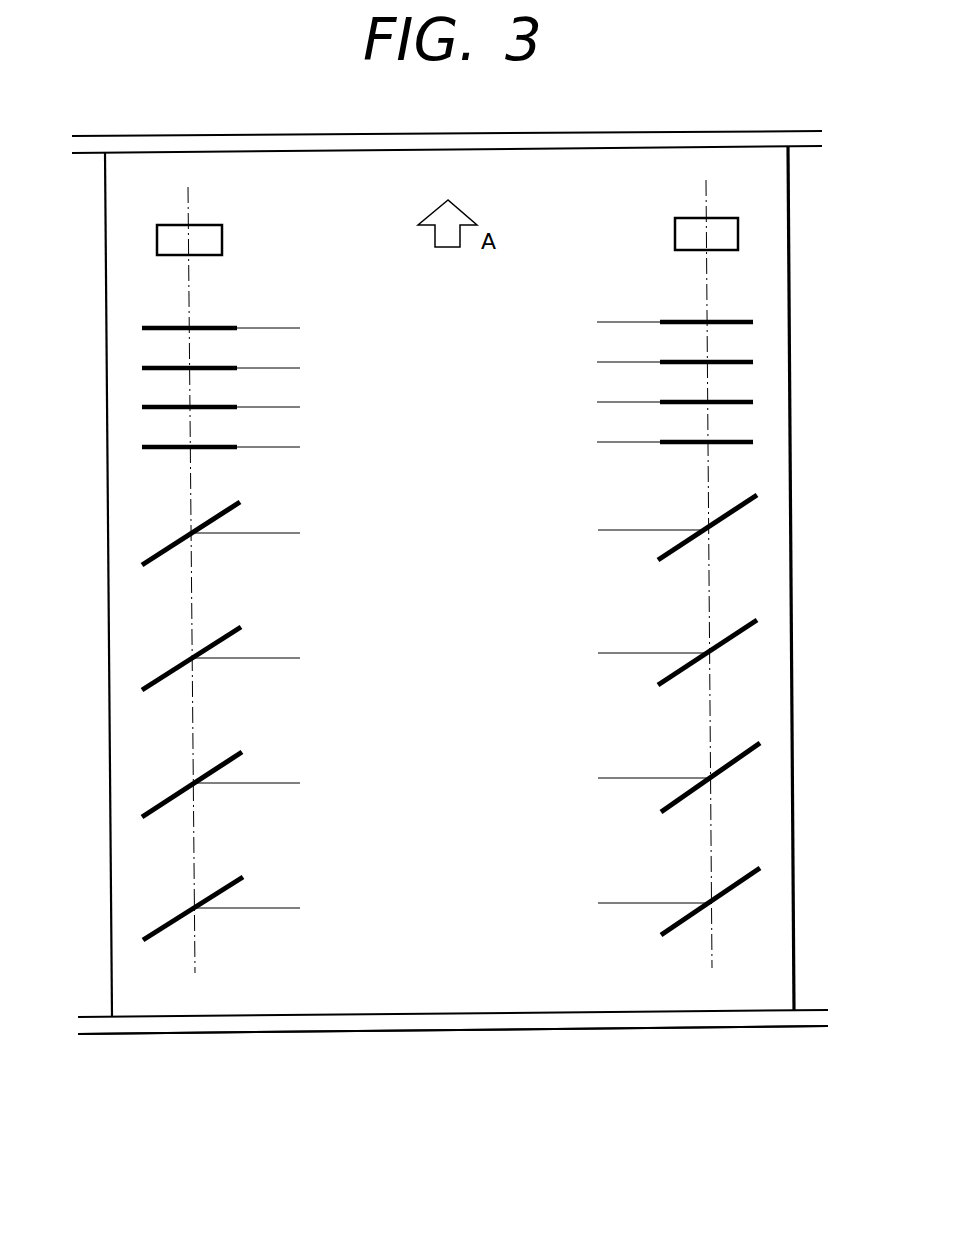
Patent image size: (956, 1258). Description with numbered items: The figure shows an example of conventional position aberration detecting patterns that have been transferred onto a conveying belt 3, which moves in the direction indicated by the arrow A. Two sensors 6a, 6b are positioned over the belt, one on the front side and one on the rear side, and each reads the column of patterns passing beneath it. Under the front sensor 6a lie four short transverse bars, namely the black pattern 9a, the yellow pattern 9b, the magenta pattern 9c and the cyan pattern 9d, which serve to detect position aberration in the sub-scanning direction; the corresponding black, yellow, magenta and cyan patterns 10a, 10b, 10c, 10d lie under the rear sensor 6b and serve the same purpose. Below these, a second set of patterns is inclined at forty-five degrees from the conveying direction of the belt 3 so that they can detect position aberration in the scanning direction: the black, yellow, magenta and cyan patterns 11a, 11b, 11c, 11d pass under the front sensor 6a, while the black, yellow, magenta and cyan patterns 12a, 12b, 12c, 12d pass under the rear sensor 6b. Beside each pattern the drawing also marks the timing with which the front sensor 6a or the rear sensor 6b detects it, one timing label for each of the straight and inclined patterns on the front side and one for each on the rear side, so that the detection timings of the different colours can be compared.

The conveying belt 3 is at (433, 992).
The sensor 6a is at (157, 240).
The sensor 6b is at (738, 236).
The black pattern 9a is at (160, 328).
The yellow pattern 9b is at (160, 368).
The magenta pattern 9c is at (160, 407).
The cyan pattern 9d is at (160, 447).
The black pattern 10a is at (737, 318).
The yellow pattern 10b is at (737, 358).
The magenta pattern 10c is at (737, 398).
The cyan pattern 10d is at (737, 438).
The black pattern 11a is at (175, 542).
The yellow pattern 11b is at (175, 667).
The magenta pattern 11c is at (175, 792).
The cyan pattern 11d is at (175, 915).
The black pattern 12a is at (728, 520).
The yellow pattern 12b is at (728, 644).
The magenta pattern 12c is at (731, 769).
The cyan pattern 12d is at (731, 894).